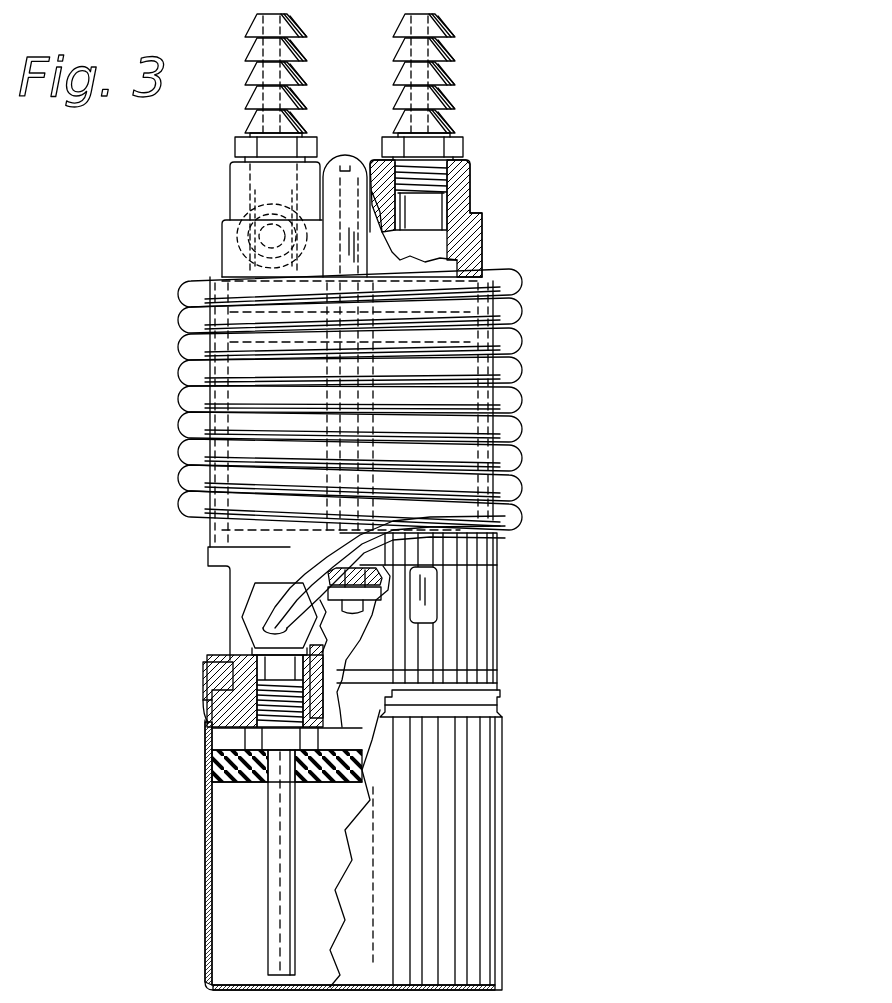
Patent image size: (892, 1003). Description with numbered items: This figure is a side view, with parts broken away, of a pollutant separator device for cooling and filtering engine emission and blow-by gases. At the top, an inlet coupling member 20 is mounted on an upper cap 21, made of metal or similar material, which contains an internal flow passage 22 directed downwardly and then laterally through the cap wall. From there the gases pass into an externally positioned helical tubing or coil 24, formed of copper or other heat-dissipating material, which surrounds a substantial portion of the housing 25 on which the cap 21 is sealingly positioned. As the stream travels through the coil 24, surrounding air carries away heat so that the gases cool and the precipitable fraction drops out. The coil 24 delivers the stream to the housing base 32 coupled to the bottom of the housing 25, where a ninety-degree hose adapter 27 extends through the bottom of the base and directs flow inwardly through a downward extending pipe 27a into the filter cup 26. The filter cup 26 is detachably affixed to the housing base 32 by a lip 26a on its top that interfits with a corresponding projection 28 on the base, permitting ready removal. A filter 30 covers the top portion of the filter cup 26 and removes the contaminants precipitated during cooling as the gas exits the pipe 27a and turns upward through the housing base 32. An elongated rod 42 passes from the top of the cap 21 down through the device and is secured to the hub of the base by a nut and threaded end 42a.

The inlet coupling member 20 is at (250, 92).
The upper cap 21 is at (480, 238).
The internal flow passage 22 is at (240, 238).
The helical tubing or coil 24 is at (521, 364).
The housing 25 is at (200, 528).
The filter cup 26 is at (207, 822).
The lip 26a is at (207, 703).
The 90° hose adapter 27 is at (247, 605).
The downward extending pipe 27a is at (264, 926).
The projection 28 is at (203, 686).
The filter 30 is at (230, 784).
The housing base 32 is at (540, 617).
The elongated rod 42 is at (336, 166).
The nut and threaded end 42a is at (380, 612).